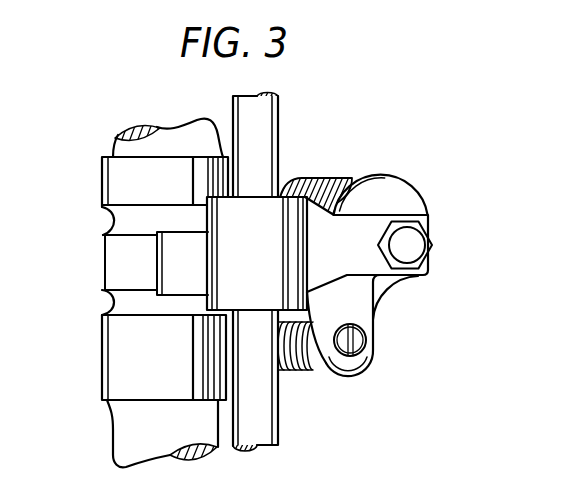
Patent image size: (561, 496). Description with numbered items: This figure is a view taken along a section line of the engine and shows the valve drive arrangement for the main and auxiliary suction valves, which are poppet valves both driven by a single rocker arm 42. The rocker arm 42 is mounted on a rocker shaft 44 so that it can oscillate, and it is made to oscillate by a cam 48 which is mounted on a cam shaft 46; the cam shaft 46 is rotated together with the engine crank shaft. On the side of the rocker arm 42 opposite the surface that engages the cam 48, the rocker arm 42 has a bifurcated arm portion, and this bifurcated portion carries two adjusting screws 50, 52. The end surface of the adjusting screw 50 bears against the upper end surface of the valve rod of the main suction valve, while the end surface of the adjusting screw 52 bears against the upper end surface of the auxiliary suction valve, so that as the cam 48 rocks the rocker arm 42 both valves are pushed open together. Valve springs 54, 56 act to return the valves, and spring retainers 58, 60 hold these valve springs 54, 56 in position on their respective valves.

The rocker arm 42 is at (340, 182).
The rocker shaft 44 is at (262, 118).
The cam shaft 46 is at (113, 157).
The cam 48 is at (118, 265).
The adjusting screw 50 is at (432, 260).
The adjusting screw 52 is at (372, 350).
The valve spring 54 is at (318, 185).
The valve spring 56 is at (305, 370).
The spring retainer 58 is at (413, 196).
The spring retainer 60 is at (355, 377).